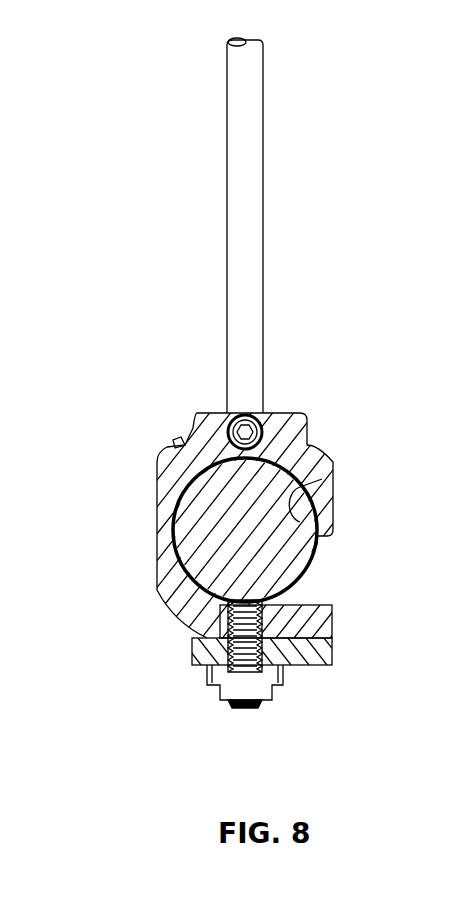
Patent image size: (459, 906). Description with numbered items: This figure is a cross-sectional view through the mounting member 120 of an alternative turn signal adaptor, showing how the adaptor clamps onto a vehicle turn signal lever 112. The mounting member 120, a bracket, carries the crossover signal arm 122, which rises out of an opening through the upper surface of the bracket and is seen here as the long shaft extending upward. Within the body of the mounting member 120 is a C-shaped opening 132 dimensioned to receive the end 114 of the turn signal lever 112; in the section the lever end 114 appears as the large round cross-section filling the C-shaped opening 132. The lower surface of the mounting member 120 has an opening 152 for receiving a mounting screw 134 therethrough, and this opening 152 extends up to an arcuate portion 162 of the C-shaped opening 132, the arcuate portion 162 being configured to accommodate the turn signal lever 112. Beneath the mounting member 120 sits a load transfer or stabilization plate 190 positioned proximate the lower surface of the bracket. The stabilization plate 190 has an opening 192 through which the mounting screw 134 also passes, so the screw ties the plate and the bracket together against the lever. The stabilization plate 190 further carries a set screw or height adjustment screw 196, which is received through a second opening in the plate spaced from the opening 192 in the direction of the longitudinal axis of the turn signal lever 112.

The crossover signal arm 122 is at (263, 182).
The mounting member 120 is at (311, 413).
The end of the turn signal lever 114 is at (326, 460).
The arcuate portion 162 is at (300, 522).
The turn signal lever 112 is at (316, 560).
The C-shaped opening 132 is at (163, 606).
The opening 152 is at (233, 640).
The opening 192 is at (236, 668).
The height adjustment screw 196 is at (253, 710).
The stabilization plate 190 is at (334, 652).
The mounting screw 134 is at (303, 667).